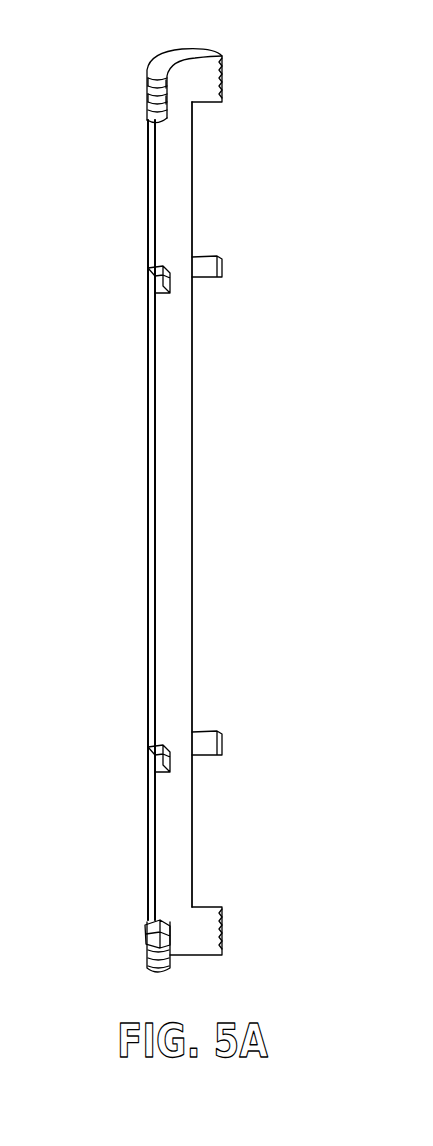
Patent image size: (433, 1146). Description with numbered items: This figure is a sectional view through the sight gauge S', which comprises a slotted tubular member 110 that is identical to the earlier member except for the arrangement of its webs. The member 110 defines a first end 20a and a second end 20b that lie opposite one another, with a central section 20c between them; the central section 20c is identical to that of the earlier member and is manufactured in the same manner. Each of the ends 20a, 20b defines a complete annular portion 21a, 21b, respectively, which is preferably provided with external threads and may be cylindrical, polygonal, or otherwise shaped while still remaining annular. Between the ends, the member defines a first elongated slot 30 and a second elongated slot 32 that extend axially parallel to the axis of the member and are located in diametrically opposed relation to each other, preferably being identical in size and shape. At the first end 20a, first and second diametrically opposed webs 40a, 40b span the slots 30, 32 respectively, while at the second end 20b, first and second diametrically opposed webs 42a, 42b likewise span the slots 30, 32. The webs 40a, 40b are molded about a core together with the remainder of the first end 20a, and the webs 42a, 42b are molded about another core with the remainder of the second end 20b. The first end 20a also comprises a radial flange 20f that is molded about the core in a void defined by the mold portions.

The complete annular portion 21b is at (222, 72).
The second end 20b is at (197, 155).
The second elongated slot 32 is at (192, 470).
The central section 20c is at (142, 377).
The first elongated slot 30 is at (150, 481).
The slotted tubular member 110 is at (142, 585).
The first end 20a is at (142, 854).
The second web 42b is at (222, 265).
The first web 42a is at (158, 283).
The second web 40b is at (222, 743).
The first web 40a is at (158, 763).
The complete annular portion 21a is at (222, 940).
The radial flange 20f is at (146, 940).
The sight gauge S' is at (283, 326).